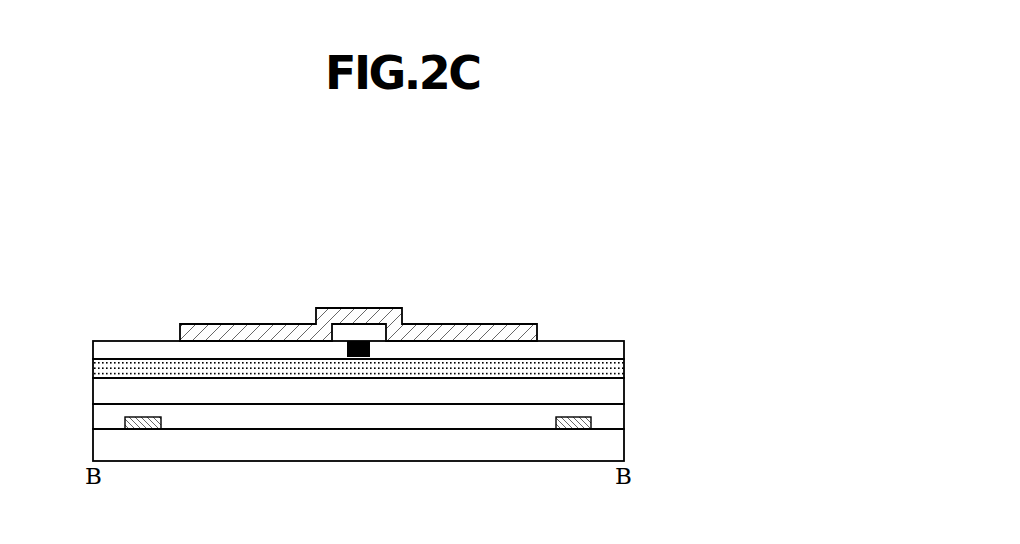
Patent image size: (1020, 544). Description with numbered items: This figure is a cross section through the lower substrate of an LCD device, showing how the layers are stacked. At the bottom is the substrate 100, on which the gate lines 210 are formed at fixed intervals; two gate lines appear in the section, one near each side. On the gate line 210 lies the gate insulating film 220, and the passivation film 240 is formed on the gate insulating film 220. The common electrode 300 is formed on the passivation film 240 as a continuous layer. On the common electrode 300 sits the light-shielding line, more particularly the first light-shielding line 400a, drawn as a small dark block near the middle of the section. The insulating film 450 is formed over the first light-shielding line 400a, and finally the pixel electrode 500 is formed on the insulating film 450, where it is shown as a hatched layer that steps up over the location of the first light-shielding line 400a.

The substrate 100 is at (624, 445).
The gate line 210 is at (591, 422).
The gate insulating film 220 is at (624, 408).
The passivation film 240 is at (624, 387).
The common electrode 300 is at (624, 363).
The insulating film 450 is at (624, 346).
The pixel electrode 500 is at (272, 324).
The first light-shielding line 400a is at (360, 341).